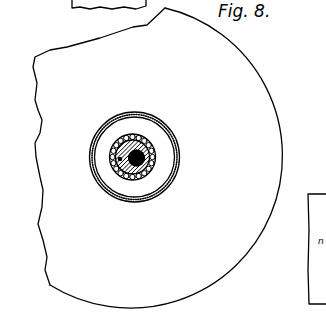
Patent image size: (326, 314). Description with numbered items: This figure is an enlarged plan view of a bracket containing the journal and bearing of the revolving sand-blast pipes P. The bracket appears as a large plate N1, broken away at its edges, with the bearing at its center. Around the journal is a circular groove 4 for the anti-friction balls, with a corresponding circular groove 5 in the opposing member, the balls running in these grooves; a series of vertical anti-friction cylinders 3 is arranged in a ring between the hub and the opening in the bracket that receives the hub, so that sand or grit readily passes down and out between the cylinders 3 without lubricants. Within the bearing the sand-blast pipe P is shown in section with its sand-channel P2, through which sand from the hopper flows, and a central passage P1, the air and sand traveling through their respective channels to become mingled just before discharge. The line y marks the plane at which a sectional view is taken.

The disk N1 is at (157, 158).
The circular groove 4 is at (149, 117).
The sand-blast pipe P is at (122, 134).
The vertical cylinders 3 is at (149, 145).
The shaft P1 is at (131, 180).
The sand-channel P2 is at (116, 163).
The circular groove 5 is at (118, 158).
The line y is at (131, 136).